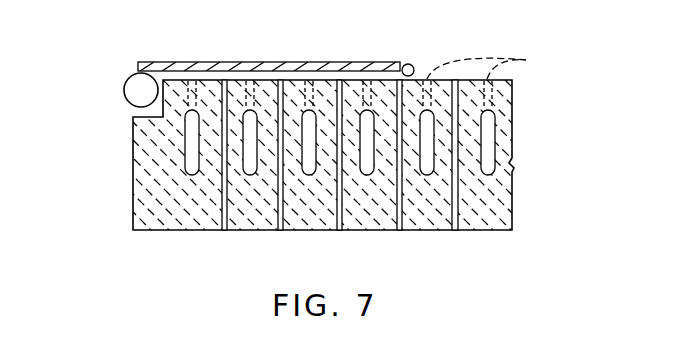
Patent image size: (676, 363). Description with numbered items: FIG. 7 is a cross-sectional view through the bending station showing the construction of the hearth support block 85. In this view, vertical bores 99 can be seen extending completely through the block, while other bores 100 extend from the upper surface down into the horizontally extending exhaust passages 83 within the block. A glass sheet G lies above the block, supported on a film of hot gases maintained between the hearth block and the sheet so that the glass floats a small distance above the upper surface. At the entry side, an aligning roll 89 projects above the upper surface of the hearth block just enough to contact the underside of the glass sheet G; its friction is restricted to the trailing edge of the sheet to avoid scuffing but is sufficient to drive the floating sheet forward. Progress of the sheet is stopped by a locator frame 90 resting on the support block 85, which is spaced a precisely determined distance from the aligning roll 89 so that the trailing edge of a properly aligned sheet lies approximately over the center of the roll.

The glass sheet G is at (273, 61).
The exhaust passages 83 is at (425, 132).
The support block 85 is at (485, 231).
The aligning roll 89 is at (125, 91).
The locator frame 90 is at (409, 64).
The vertical bores 99 is at (400, 231).
The bores 100 is at (522, 60).